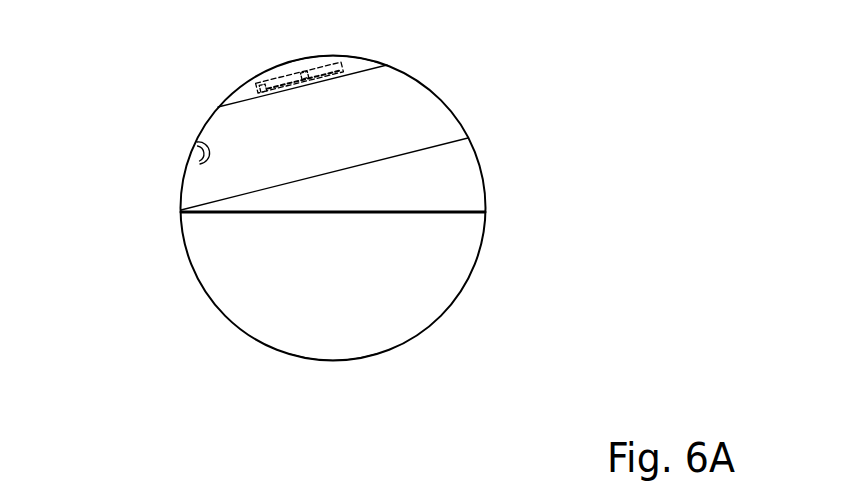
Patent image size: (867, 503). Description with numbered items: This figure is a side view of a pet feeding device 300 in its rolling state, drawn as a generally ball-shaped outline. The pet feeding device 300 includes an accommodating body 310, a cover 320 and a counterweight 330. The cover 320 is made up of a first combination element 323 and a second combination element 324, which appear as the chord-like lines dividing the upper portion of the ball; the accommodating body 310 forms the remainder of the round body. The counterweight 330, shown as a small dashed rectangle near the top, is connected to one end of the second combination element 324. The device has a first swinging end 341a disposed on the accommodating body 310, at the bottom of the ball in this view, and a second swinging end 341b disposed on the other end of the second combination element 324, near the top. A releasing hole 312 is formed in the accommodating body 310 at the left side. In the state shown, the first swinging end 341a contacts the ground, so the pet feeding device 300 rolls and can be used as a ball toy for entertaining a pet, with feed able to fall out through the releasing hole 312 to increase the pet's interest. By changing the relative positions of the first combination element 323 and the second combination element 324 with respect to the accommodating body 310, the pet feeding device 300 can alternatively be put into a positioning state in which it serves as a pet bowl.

The pet feeding device 300 is at (105, 60).
The accommodating body 310 is at (453, 280).
The releasing hole 312 is at (187, 147).
The cover 320 is at (423, 122).
The first combination element 323 is at (433, 108).
The second combination element 324 is at (360, 58).
The counterweight 330 is at (252, 95).
The first swinging end 341a is at (333, 360).
The second swinging end 341b is at (283, 68).